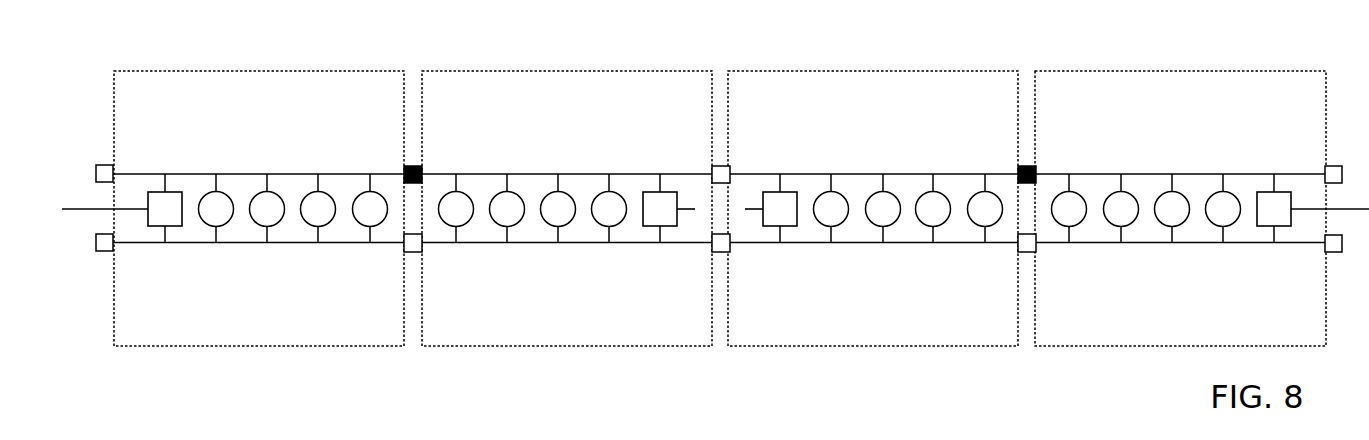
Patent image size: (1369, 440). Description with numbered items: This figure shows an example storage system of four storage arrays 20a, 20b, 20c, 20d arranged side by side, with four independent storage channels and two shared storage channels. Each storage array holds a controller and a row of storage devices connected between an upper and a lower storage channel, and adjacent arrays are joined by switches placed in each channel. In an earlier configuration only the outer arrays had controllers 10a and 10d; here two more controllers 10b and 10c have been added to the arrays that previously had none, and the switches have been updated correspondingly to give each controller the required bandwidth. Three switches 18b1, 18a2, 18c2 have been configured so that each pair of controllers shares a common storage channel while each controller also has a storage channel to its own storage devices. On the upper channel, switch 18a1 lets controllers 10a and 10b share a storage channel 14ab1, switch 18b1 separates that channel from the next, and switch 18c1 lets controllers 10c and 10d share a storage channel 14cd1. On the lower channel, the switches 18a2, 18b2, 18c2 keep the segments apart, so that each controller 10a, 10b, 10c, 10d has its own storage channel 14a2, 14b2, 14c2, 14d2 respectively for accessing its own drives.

The storage array 20a is at (259, 71).
The storage array 20b is at (567, 71).
The storage array 20c is at (875, 71).
The storage array 20d is at (1180, 71).
The controller 10a is at (173, 191).
The controller 10b is at (667, 193).
The controller 10c is at (788, 193).
The controller 10d is at (1283, 193).
The storage channel 14ab1 is at (575, 173).
The storage channel 14cd1 is at (900, 173).
The storage channel 14a2 is at (285, 243).
The storage channel 14b2 is at (575, 245).
The storage channel 14c2 is at (900, 245).
The storage channel 14d2 is at (1189, 245).
The switch 18a1 is at (413, 166).
The switch 18a2 is at (412, 253).
The switch 18b1 is at (720, 166).
The switch 18b2 is at (720, 253).
The switch 18c1 is at (1028, 167).
The switch 18c2 is at (1028, 253).